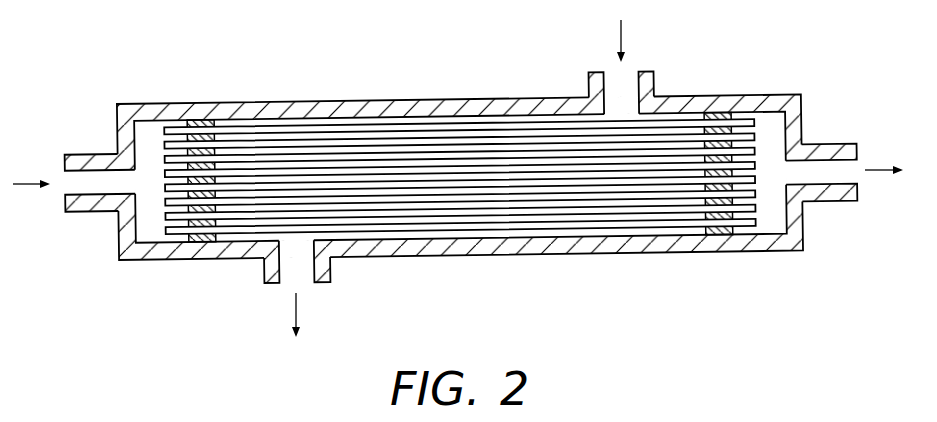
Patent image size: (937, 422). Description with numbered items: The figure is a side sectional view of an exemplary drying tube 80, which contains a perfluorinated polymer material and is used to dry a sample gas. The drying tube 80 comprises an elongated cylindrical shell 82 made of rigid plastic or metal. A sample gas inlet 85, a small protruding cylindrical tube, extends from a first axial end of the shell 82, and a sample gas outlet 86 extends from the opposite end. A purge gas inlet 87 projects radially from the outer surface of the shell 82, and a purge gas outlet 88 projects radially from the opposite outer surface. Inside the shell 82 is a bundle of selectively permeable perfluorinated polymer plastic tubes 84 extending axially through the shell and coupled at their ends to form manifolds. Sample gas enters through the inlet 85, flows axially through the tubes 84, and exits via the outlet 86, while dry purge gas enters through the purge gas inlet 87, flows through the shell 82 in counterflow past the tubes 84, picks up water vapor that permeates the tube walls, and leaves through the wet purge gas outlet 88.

The drying tube 80 is at (160, 70).
The shell 82 is at (355, 101).
The perfluorinated polymer plastic tubes 84 is at (590, 214).
The sample gas inlet 85 is at (92, 154).
The sample gas outlet 86 is at (830, 143).
The purge gas inlet 87 is at (656, 92).
The purge gas outlet 88 is at (331, 270).